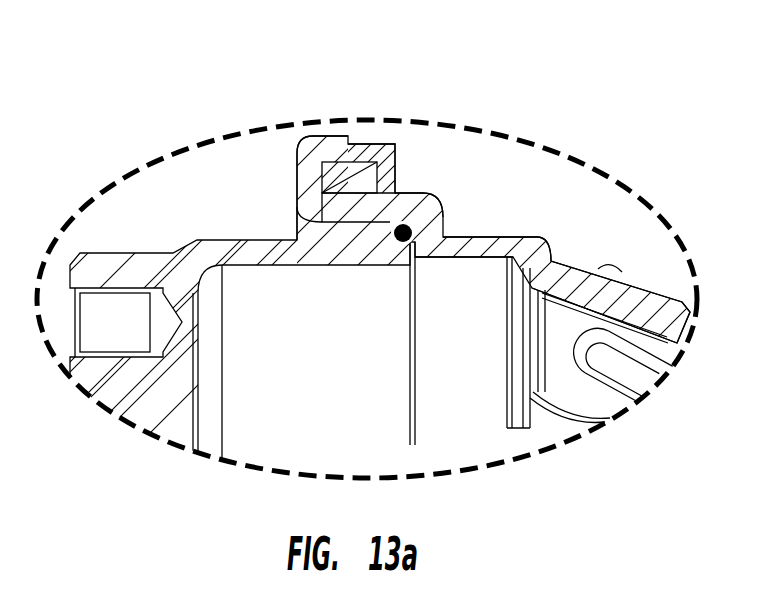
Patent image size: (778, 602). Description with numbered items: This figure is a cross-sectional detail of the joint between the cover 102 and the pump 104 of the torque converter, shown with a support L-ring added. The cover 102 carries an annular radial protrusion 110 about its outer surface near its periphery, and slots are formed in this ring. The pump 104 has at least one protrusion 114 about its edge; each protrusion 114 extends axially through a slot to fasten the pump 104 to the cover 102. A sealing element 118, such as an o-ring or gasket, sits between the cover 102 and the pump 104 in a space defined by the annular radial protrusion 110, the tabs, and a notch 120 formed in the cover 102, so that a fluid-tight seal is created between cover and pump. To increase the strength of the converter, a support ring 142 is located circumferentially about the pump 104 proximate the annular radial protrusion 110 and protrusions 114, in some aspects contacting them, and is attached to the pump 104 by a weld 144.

The cover 102 is at (158, 253).
The pump 104 is at (540, 238).
The annular radial protrusion 110 is at (344, 172).
The protrusion 114 is at (297, 157).
The sealing element 118 is at (413, 230).
The notch 120 is at (395, 232).
The support ring 142 is at (373, 145).
The weld 144 is at (400, 187).